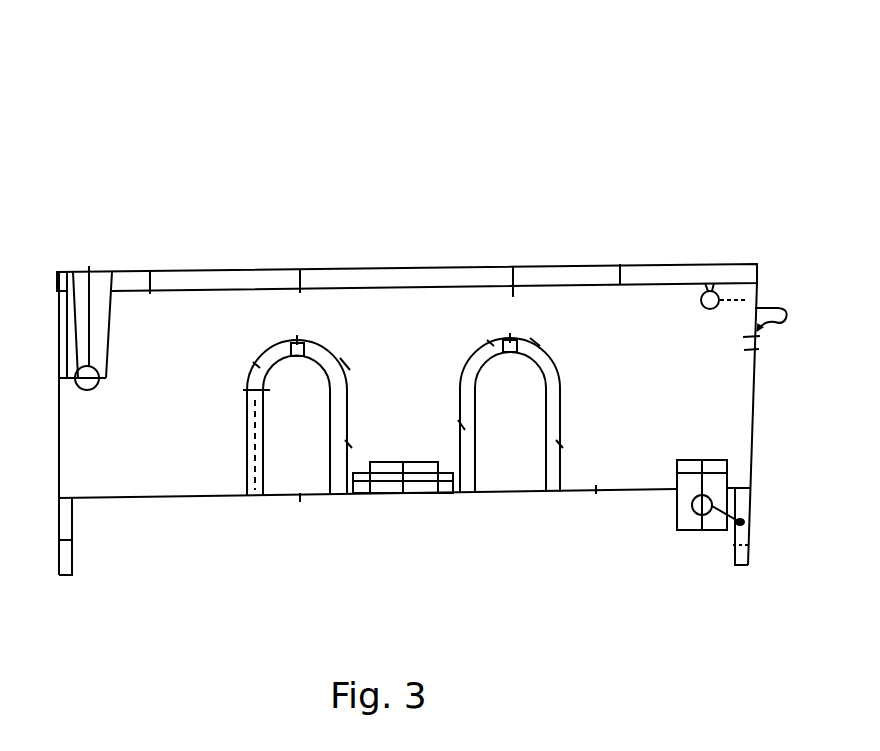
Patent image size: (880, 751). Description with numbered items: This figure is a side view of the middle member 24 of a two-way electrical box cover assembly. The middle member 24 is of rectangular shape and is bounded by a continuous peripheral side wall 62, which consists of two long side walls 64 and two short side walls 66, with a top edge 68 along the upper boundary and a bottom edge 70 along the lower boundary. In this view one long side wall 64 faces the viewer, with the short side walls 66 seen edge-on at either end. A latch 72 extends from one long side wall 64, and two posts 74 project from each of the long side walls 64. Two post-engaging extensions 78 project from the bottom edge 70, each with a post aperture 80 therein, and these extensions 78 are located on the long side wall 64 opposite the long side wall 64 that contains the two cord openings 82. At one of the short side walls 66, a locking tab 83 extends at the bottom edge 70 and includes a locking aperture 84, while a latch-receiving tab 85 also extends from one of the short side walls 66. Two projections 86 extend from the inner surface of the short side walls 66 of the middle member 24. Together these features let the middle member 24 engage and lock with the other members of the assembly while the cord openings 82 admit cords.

The middle member 24 is at (180, 122).
The continuous peripheral side wall 62 is at (287, 305).
The long side walls 64 is at (432, 325).
The short side walls 66 is at (58, 408).
The top edge 68 is at (607, 262).
The bottom edge 70 is at (605, 496).
The latch 72 is at (427, 495).
The posts 74 is at (98, 388).
The post-engaging extensions 78 is at (72, 556).
The post apertures 80 is at (74, 530).
The cord openings 82 is at (497, 401).
The locking tab 83 is at (683, 483).
The locking aperture 84 is at (700, 505).
The latch-receiving tab 85 is at (779, 322).
The projections 86 is at (728, 528).